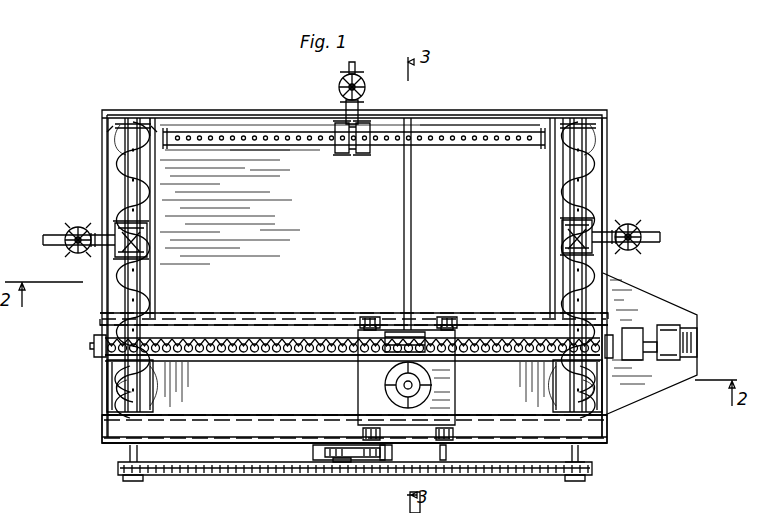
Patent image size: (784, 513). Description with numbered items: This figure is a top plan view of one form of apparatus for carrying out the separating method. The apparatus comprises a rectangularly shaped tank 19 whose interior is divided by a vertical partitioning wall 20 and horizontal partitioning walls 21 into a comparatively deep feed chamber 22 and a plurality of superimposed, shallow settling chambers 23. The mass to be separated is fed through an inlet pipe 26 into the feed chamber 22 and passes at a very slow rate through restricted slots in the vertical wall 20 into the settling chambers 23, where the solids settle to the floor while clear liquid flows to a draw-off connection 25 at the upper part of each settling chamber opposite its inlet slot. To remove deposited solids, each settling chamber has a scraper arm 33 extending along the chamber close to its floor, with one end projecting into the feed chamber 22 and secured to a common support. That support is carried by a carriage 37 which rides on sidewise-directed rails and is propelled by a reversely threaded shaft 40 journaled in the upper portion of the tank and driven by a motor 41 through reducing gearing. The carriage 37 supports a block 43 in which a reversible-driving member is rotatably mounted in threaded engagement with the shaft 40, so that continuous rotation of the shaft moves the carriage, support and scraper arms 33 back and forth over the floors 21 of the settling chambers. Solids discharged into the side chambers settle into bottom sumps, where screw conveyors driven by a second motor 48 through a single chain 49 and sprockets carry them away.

The tank 19 is at (242, 104).
The vertical partitioning wall 20 is at (255, 360).
The horizontal partitioning wall 21 is at (245, 160).
The feed chamber 22 is at (290, 435).
The settling chamber 23 is at (283, 150).
The draw-off connection 25 is at (446, 131).
The inlet pipe 26 is at (345, 462).
The scraper arm 33 is at (412, 213).
The carriage 37 is at (445, 397).
The shaft 40 is at (238, 338).
The motor 41 is at (690, 333).
The block 43 is at (410, 335).
The motor 48 is at (382, 461).
The chain 49 is at (449, 463).